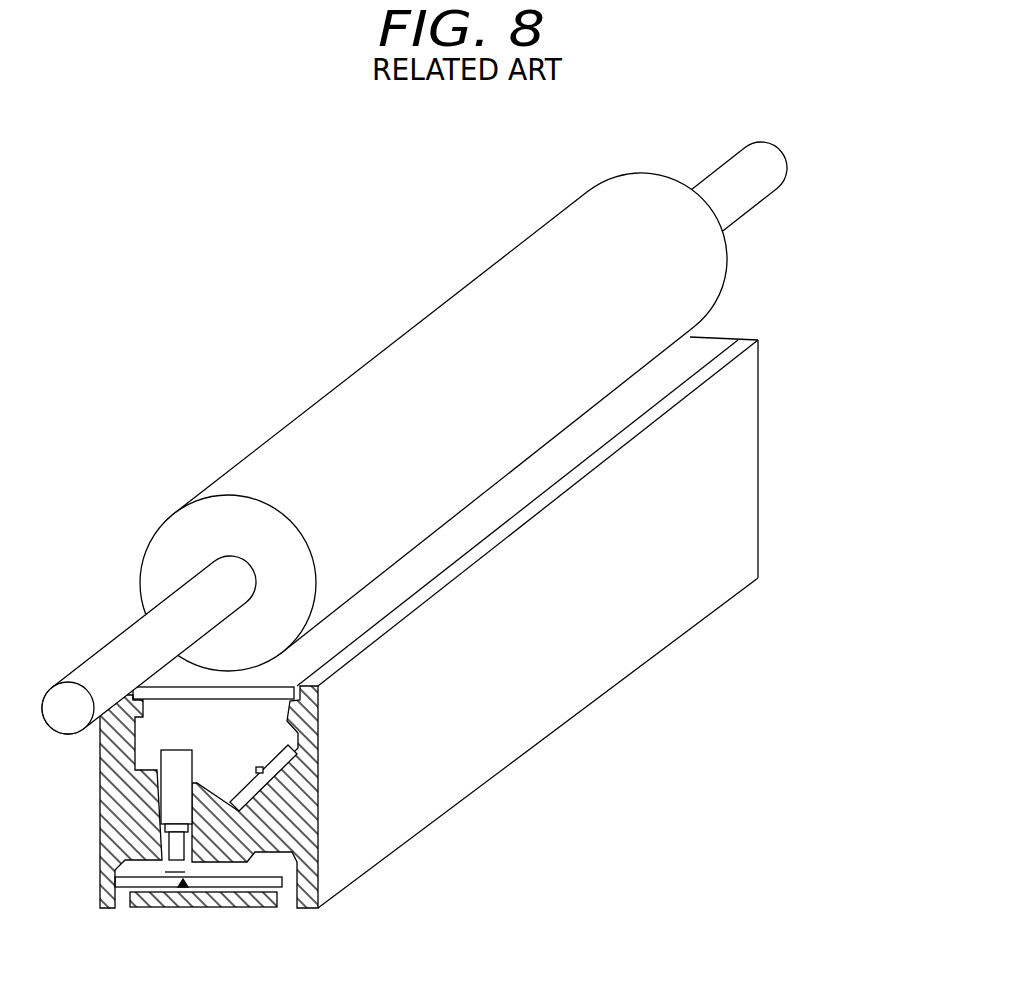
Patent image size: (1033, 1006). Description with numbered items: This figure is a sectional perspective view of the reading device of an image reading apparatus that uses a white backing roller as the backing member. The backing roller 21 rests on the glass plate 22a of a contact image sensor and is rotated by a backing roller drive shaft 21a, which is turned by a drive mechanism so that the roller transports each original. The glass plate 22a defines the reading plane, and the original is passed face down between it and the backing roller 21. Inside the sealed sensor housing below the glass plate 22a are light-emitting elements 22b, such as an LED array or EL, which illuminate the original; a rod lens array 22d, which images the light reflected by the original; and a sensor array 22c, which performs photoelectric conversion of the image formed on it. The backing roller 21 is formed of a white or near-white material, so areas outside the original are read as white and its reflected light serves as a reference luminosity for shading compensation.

The backing roller 21 is at (580, 353).
The backing roller drive shaft 21a is at (85, 652).
The glass plate 22a is at (278, 667).
The light-emitting elements 22b is at (262, 776).
The sensor array 22c is at (210, 908).
The rod lens array 22d is at (203, 813).